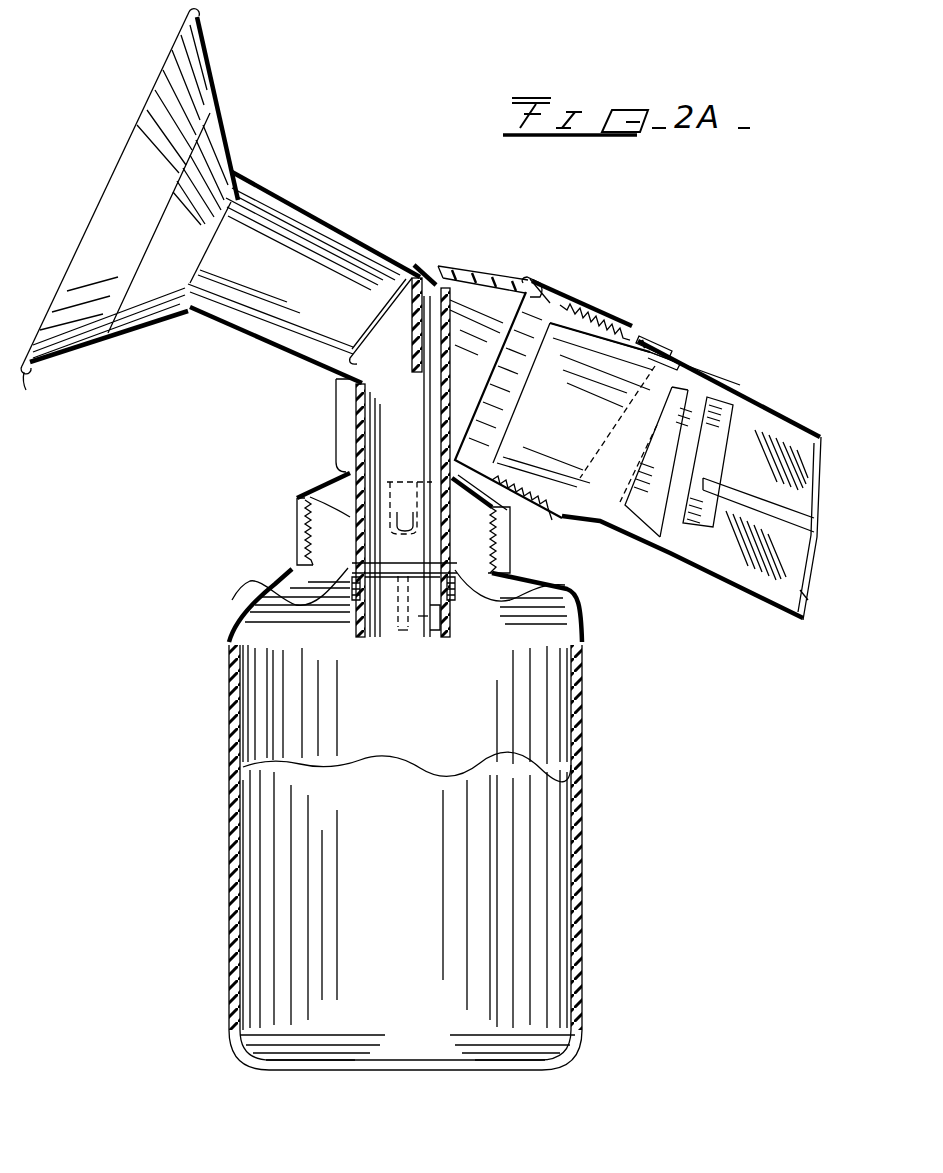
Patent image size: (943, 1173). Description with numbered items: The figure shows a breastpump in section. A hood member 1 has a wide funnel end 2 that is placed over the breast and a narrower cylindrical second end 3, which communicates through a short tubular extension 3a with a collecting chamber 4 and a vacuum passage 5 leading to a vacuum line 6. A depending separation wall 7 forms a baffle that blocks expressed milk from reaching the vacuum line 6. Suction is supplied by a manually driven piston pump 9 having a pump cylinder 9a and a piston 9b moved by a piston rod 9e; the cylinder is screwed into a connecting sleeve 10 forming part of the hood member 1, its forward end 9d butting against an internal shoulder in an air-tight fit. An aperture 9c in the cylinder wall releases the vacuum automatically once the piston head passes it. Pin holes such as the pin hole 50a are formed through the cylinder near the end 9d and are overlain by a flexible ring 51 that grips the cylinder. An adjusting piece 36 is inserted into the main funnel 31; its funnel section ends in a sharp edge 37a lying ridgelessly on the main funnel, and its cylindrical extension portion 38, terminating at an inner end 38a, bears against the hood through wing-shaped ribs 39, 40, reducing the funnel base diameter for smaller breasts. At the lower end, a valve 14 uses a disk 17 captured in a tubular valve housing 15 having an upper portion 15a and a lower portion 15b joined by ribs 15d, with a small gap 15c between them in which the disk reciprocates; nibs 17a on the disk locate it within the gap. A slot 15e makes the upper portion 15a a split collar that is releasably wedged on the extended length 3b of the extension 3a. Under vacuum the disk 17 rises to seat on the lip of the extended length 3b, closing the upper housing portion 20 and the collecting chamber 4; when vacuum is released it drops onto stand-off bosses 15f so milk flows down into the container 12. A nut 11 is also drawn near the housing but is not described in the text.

The hood member 1 is at (205, 51).
The funnel end 2 is at (30, 382).
The second end 3 is at (386, 263).
The tubular extension 3a is at (357, 407).
The extended length 3b is at (500, 551).
The collecting chamber 4 is at (397, 417).
The vacuum passage 5 is at (448, 298).
The vacuum line 6 is at (564, 424).
The separation wall 7 is at (412, 332).
The piston pump 9 is at (732, 396).
The pump cylinder 9a is at (768, 408).
The piston 9b is at (697, 403).
The aperture 9c is at (762, 603).
The forward end 9d is at (522, 280).
The piston rod 9e is at (705, 492).
The connecting sleeve 10 is at (595, 312).
The nut 11 is at (298, 537).
The container 12 is at (230, 640).
The valve 14 is at (459, 588).
The valve housing 15 is at (345, 611).
The upper portion 15a is at (313, 490).
The lower portion 15b is at (445, 630).
The gap 15c is at (413, 612).
The ribs 15d is at (352, 615).
The slot 15e is at (417, 582).
The stand-off bosses 15f is at (435, 640).
The disk 17 is at (404, 589).
The nibs 17a is at (270, 590).
The upper portion of the housing 20 is at (386, 482).
The main funnel 31 is at (212, 112).
The adjusting piece 36 is at (281, 216).
The sharp edge 37a is at (122, 333).
The extension portion 38 is at (356, 248).
The inner end 38a is at (420, 264).
The rib 39 is at (374, 257).
The rib 40 is at (322, 362).
The pin hole 50a is at (634, 398).
The ring 51 is at (661, 340).